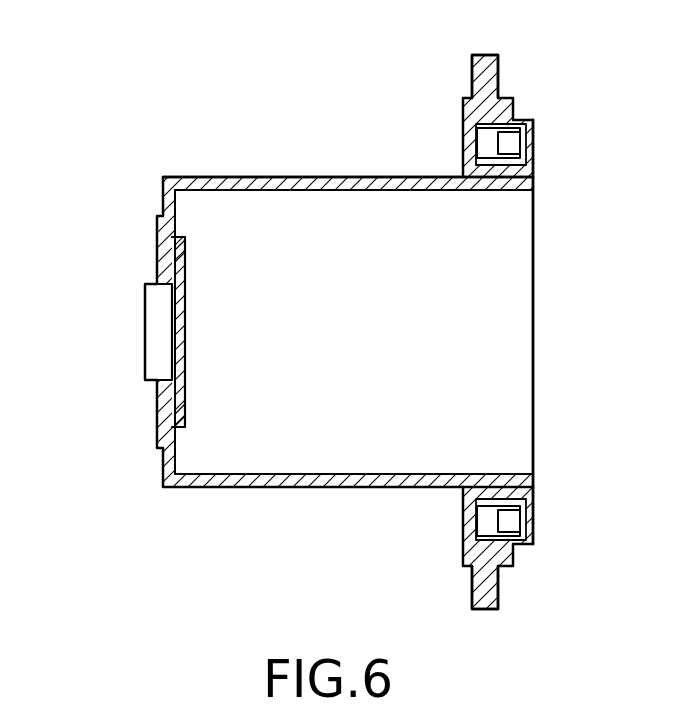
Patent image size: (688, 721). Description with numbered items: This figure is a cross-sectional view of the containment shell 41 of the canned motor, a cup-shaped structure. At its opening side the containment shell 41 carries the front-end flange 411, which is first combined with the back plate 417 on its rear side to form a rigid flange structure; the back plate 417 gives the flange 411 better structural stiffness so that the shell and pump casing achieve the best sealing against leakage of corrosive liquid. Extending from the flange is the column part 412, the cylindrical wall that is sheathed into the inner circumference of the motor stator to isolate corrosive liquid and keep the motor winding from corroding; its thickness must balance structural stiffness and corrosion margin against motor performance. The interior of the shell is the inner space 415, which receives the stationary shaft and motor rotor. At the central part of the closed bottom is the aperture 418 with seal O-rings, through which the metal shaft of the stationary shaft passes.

The containment shell 41 is at (222, 178).
The front-end flange 411 is at (533, 120).
The column part 412 is at (350, 180).
The inner space 415 is at (373, 332).
The back plate 417 is at (498, 58).
The aperture 418 is at (157, 333).